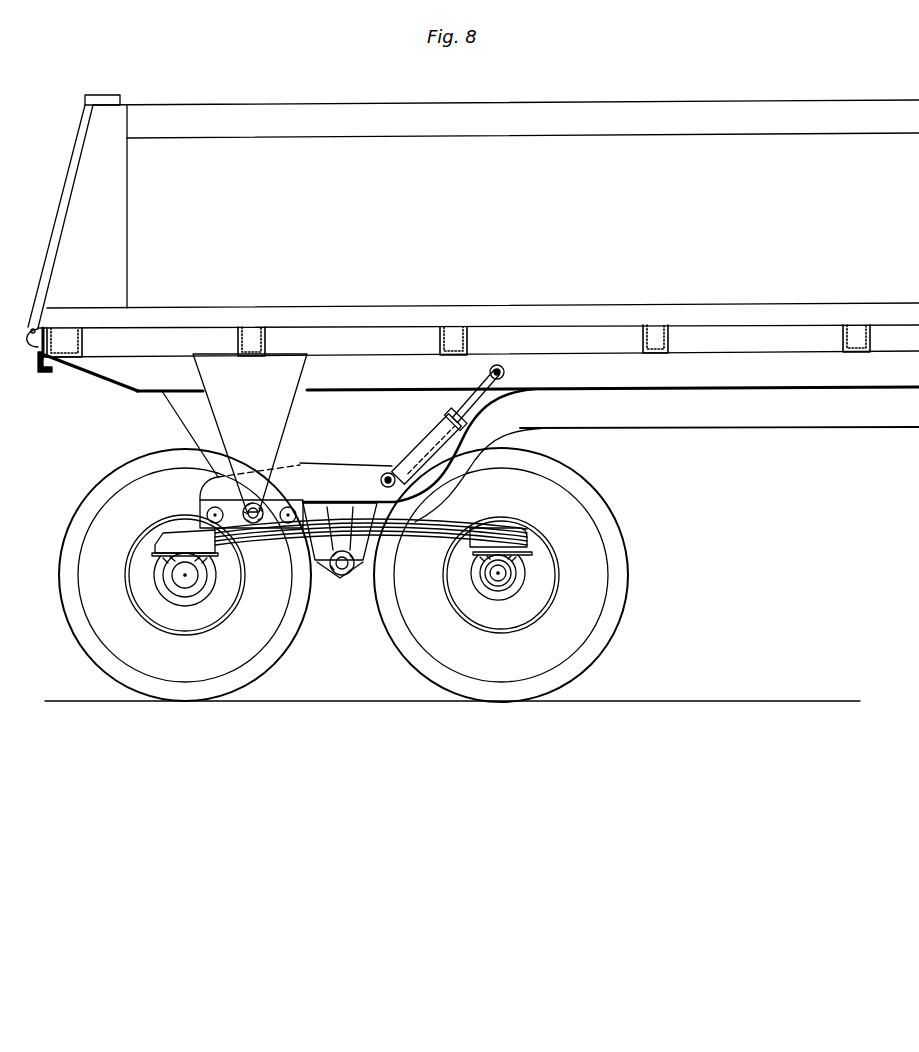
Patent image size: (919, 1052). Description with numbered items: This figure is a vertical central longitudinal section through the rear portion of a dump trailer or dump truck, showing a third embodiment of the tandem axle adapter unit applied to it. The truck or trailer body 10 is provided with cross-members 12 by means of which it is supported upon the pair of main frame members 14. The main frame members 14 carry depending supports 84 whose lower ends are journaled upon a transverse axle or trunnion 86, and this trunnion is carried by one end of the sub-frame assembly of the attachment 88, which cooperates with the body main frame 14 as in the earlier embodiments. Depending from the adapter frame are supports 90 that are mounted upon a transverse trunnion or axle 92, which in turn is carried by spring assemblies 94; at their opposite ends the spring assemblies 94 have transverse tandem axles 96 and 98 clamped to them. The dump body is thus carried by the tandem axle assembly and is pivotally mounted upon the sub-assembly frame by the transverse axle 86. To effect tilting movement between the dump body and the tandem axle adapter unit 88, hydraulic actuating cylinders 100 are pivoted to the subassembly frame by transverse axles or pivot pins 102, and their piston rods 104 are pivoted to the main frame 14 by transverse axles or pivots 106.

The truck or trailer body 10 is at (277, 145).
The cross-members 12 is at (440, 340).
The main frame members 14 is at (478, 359).
The depending supports 84 is at (250, 433).
The transverse axle or trunnion 86 is at (247, 506).
The attachment 88 is at (676, 429).
The supports 90 is at (317, 545).
The transverse trunnion or axle 92 is at (343, 577).
The spring assemblies 94 is at (393, 538).
The transverse tandem axle 96 is at (183, 580).
The transverse tandem axle 98 is at (513, 568).
The hydraulic actuating cylinders 100 is at (435, 426).
The transverse axles or pivot pins 102 is at (381, 480).
The piston rods 104 is at (482, 385).
The transverse axles or pivots 106 is at (505, 372).